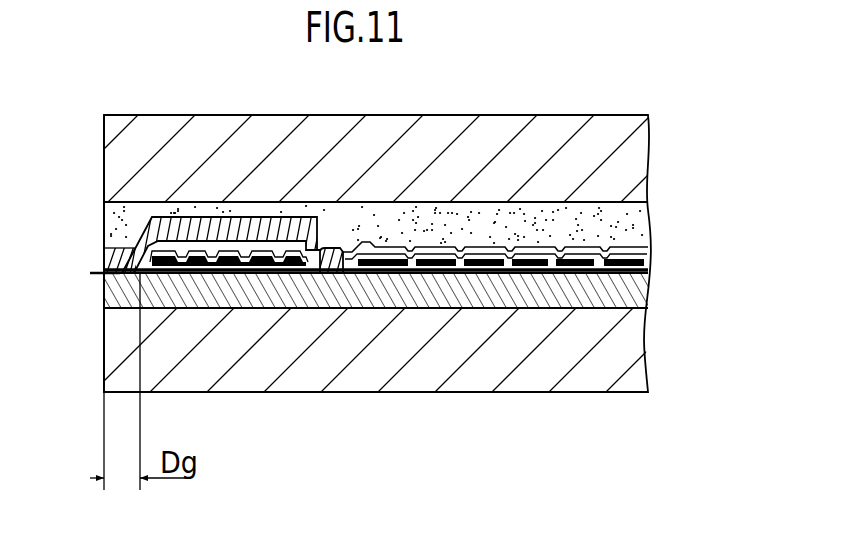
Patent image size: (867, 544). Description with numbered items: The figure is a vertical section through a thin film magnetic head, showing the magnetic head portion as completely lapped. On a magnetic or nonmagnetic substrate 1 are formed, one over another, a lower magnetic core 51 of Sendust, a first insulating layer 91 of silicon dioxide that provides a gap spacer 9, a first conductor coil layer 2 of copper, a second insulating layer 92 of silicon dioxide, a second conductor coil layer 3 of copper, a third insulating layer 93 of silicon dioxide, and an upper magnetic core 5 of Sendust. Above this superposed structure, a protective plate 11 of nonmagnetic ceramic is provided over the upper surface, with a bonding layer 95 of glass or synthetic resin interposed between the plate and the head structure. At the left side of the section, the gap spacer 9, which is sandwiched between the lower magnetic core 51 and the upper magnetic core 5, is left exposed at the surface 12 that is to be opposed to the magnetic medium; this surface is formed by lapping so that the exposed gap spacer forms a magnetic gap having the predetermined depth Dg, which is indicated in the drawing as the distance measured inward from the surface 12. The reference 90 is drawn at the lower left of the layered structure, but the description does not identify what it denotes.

The substrate 1 is at (628, 355).
The first conductor coil layer 2 is at (488, 267).
The second conductor coil layer 3 is at (448, 267).
The upper magnetic core 5 is at (237, 226).
The gap spacer 9 is at (123, 265).
The protective plate 11 is at (615, 168).
The surface opposed to the magnetic medium 12 is at (104, 170).
The lower magnetic core 51 is at (633, 299).
The bottom conductive layer 90 is at (100, 274).
The first insulating layer 91 is at (647, 271).
The second insulating layer 92 is at (643, 252).
The third insulating layer 93 is at (555, 264).
The bonding layer 95 is at (628, 232).